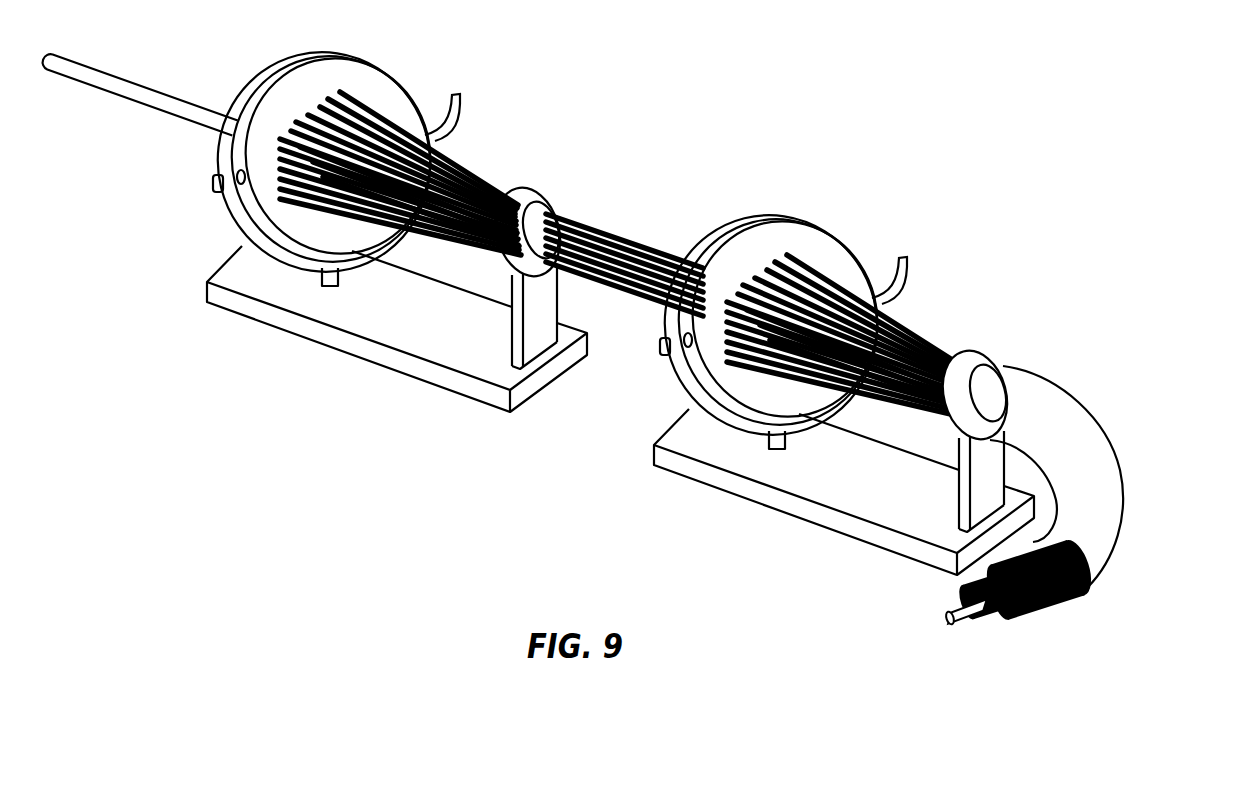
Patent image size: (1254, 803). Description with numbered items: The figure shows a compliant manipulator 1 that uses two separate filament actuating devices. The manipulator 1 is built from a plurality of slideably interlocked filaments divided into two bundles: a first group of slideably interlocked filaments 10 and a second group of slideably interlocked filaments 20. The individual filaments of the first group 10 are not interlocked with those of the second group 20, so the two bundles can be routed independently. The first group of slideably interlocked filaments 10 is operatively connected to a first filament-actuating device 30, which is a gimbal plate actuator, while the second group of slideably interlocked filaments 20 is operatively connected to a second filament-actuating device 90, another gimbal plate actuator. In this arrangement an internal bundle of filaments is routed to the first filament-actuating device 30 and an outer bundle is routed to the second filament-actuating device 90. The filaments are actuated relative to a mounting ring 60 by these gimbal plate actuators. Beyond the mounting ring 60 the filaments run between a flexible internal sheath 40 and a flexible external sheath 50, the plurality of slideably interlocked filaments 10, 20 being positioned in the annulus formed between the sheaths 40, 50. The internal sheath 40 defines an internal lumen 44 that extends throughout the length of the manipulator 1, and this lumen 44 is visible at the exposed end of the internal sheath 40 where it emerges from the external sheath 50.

The manipulator 1 is at (538, 307).
The first group of slideably interlocked filaments 10 is at (1060, 698).
The second group of slideably interlocked filaments 20 is at (1165, 650).
The first filament-actuating device 30 is at (346, 162).
The flexible internal sheath 40 is at (967, 613).
The internal lumen 44 is at (952, 615).
The flexible external sheath 50 is at (1100, 462).
The mounting ring 60 is at (995, 358).
The second filament-actuating device 90 is at (840, 245).